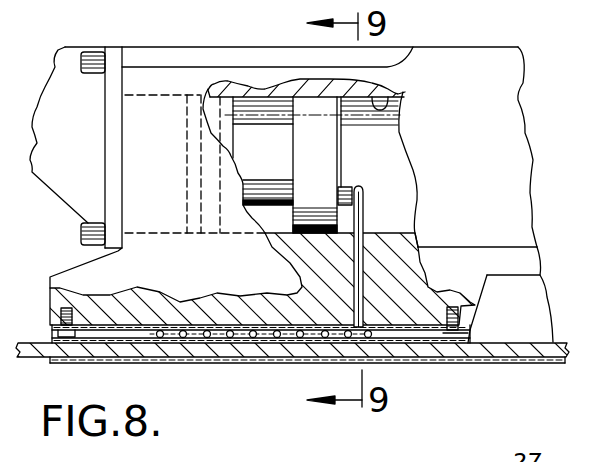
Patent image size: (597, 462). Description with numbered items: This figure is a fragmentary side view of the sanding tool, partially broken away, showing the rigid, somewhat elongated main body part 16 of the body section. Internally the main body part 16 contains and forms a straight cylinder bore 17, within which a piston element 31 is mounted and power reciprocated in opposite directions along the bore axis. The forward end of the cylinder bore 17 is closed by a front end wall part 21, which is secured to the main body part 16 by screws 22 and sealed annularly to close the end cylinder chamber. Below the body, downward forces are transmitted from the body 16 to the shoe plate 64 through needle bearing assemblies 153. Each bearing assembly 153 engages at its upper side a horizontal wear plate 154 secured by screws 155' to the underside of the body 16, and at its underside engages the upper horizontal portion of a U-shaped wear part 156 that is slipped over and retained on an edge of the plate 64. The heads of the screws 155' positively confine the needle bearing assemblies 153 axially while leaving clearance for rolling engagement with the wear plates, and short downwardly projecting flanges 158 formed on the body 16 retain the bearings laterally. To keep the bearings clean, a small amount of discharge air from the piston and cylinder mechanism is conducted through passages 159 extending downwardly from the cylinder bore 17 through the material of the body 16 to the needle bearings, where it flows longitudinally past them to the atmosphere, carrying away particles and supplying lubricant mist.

The main body part 16 is at (518, 174).
The cylinder bore 17 is at (401, 99).
The front end wall part 21 is at (74, 204).
The screws 22 is at (86, 60).
The piston element 31 is at (252, 112).
The plate 64 is at (518, 342).
The needle bearing assemblies 153 is at (217, 334).
The horizontal wear plate 154 is at (112, 333).
The screws 155' is at (479, 295).
The U-shaped wear part 156 is at (95, 366).
The downwardly projecting flanges 158 is at (417, 334).
The passages 159 is at (361, 193).